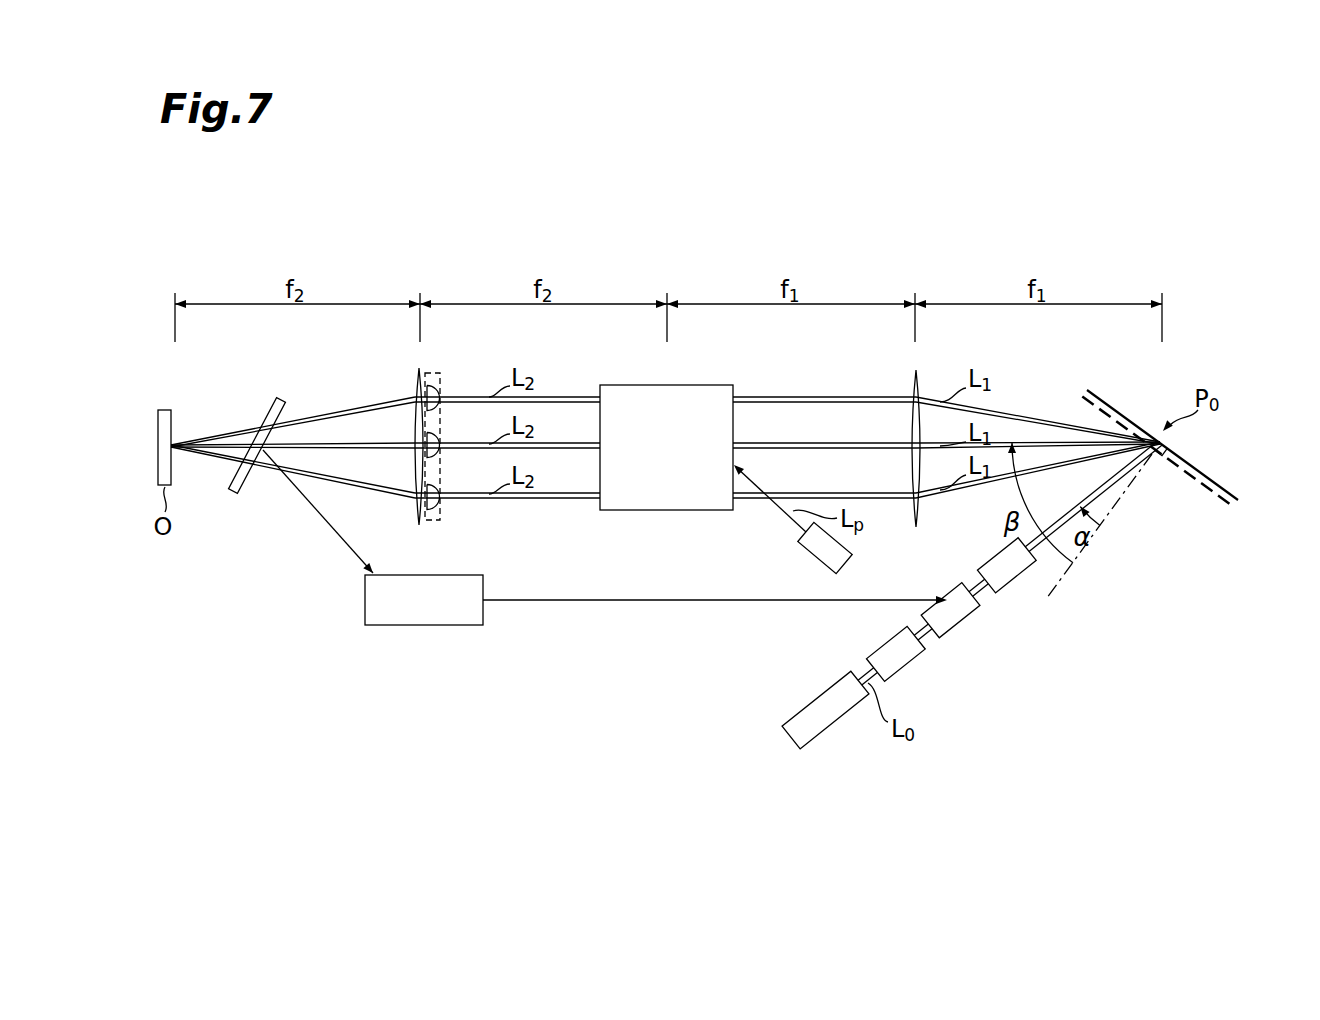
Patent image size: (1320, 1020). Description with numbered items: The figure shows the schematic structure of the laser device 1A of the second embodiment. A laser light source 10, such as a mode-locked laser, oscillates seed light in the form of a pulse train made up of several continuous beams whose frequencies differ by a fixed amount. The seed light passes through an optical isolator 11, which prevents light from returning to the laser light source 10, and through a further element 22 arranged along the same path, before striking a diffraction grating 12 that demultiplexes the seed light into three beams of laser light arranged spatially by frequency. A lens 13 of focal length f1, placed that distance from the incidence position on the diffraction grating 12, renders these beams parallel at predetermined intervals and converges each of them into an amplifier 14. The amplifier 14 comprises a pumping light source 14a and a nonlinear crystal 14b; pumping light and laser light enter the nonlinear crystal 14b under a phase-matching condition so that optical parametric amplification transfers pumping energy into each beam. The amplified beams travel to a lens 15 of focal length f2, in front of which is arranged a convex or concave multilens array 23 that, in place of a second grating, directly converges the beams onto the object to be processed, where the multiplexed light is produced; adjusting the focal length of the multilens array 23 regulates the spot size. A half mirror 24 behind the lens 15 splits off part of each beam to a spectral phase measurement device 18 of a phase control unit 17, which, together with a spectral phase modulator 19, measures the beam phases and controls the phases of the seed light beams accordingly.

The laser device 1A is at (1052, 205).
The laser light source 10 is at (831, 727).
The optical isolator 11 is at (1010, 584).
The diffraction grating 12 is at (1214, 472).
The lens 13 is at (921, 386).
The amplifier 14 is at (726, 491).
The pumping light source 14a is at (793, 519).
The nonlinear crystal 14b is at (700, 511).
The lens 15 is at (416, 386).
The phase control unit 17 is at (672, 645).
The spectral phase measurement device 18 is at (450, 626).
The spectral phase modulator 19 is at (935, 610).
The optical element 22 is at (900, 672).
The multilens array 23 is at (441, 512).
The half mirror 24 is at (270, 400).